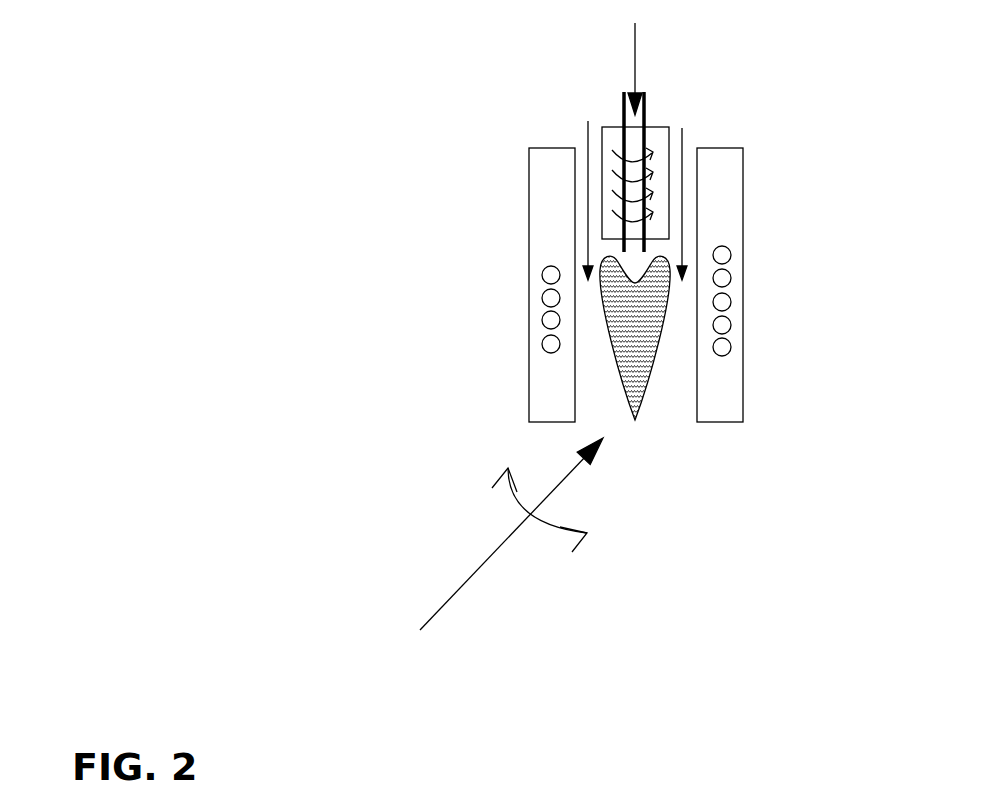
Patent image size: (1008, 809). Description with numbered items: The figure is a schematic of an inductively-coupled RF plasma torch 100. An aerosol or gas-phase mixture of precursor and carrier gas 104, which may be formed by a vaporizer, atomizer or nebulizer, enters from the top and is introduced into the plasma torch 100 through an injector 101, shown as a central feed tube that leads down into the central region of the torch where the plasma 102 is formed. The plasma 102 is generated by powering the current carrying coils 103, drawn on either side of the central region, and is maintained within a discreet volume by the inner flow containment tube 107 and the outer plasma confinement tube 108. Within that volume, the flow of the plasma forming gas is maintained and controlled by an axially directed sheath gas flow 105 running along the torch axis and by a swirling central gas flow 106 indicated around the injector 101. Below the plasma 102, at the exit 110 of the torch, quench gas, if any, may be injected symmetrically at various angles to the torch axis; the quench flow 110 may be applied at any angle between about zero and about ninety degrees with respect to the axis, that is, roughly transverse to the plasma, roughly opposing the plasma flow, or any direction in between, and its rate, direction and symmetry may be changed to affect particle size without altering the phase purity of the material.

The inductively-coupled RF plasma torch 100 is at (490, 405).
The injector 101 is at (646, 113).
The plasma 102 is at (644, 342).
The current carrying coils 103 is at (525, 280).
The aerosol or gas-phase mixture of precursor and carrier gas 104 is at (637, 57).
The axially directed sheath gas flow 105 is at (706, 217).
The swirling central gas flow 106 is at (592, 193).
The inner flow containment tube 107 is at (694, 134).
The outer plasma confinement tube 108 is at (738, 397).
The exit of the torch (quench flow) 110 is at (490, 557).